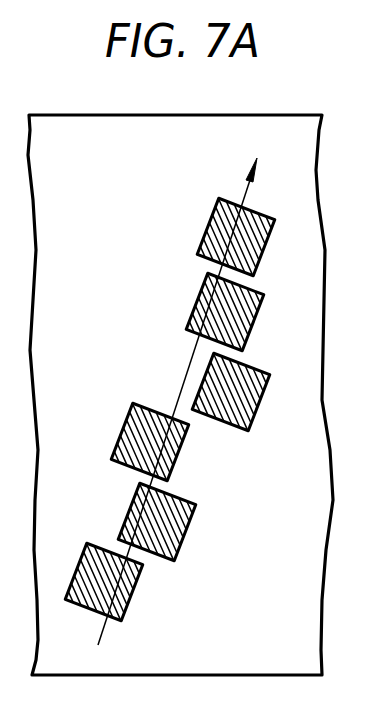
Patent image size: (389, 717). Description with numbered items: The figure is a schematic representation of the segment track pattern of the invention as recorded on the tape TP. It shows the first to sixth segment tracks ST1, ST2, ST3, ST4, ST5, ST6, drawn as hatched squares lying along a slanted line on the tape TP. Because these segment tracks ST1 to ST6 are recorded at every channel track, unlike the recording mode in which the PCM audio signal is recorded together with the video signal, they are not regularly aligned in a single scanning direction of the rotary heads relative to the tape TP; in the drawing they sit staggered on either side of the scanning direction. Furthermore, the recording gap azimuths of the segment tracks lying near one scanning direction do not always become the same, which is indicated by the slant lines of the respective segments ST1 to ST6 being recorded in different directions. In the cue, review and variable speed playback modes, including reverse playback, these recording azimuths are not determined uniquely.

The tape TP is at (90, 124).
The 1st segment track ST1 is at (133, 597).
The 2nd segment track ST2 is at (187, 533).
The 3rd segment track ST3 is at (142, 404).
The 4th segment track ST4 is at (218, 423).
The 5th segment track ST5 is at (198, 295).
The 6th segment track ST6 is at (205, 230).